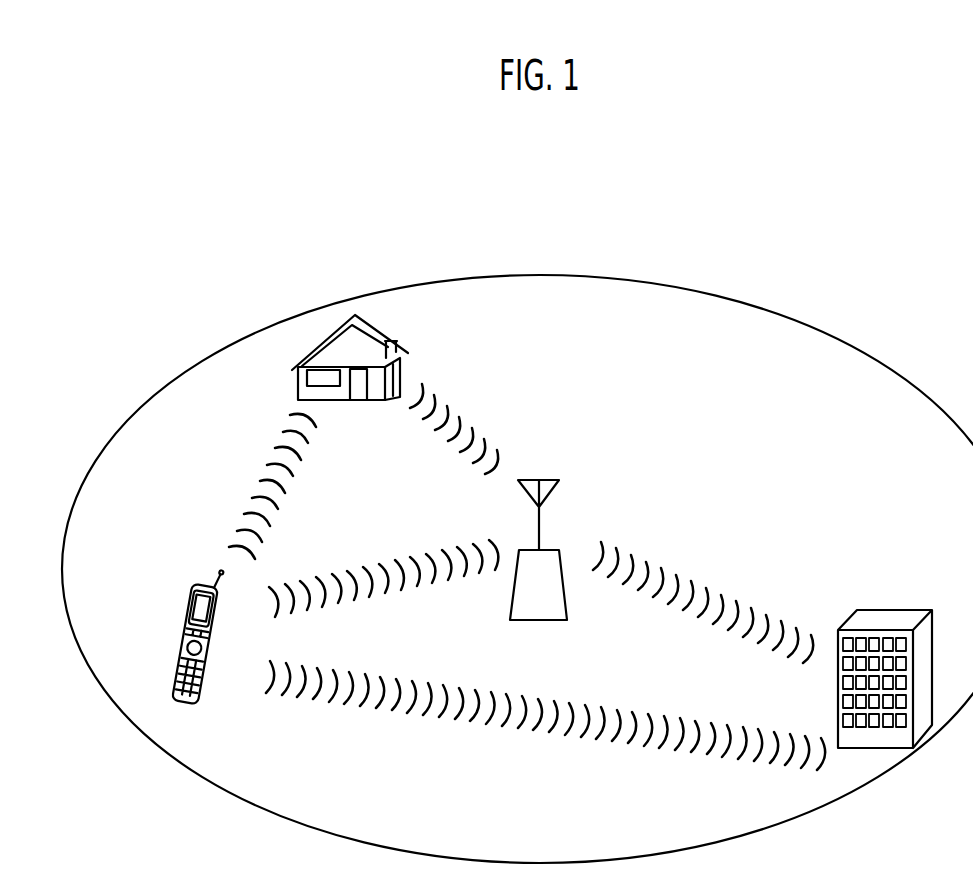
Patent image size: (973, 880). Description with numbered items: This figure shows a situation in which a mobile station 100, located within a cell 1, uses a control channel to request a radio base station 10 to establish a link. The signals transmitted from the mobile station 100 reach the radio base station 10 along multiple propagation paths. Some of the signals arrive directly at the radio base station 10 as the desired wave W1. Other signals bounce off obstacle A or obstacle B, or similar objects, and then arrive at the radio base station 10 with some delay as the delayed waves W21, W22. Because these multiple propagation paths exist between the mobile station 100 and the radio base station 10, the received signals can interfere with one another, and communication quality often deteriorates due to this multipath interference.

The cell 1 is at (578, 275).
The radio base station 10 is at (558, 621).
The mobile station 100 is at (203, 687).
The obstacle A is at (372, 332).
The obstacle B is at (893, 609).
The desired wave W1 is at (381, 538).
The delayed wave W21 is at (496, 408).
The delayed wave W22 is at (746, 572).